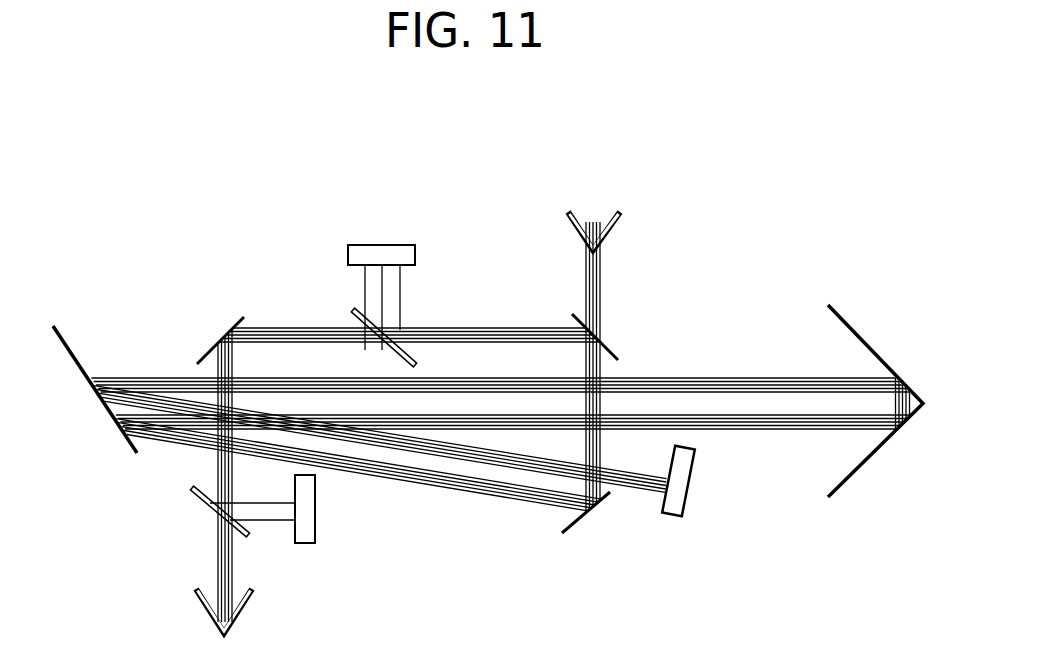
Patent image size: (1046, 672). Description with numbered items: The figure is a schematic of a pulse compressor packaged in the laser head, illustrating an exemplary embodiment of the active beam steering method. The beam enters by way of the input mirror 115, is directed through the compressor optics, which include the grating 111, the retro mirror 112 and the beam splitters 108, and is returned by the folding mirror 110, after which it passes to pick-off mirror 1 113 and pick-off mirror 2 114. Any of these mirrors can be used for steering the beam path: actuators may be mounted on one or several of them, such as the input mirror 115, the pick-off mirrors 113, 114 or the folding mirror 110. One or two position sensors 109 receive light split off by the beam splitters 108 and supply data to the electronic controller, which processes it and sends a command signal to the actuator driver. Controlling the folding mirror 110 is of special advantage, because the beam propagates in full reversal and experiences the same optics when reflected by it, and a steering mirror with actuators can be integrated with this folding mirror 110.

The beam splitter 108 is at (182, 540).
The position sensor 109 is at (343, 527).
The folding mirror 110 is at (692, 483).
The grating 111 is at (105, 410).
The retro mirror 112 is at (853, 322).
The pick-off mirror 1 113 is at (617, 343).
The pick-off mirror 2 114 is at (242, 320).
The input mirror 115 is at (580, 520).